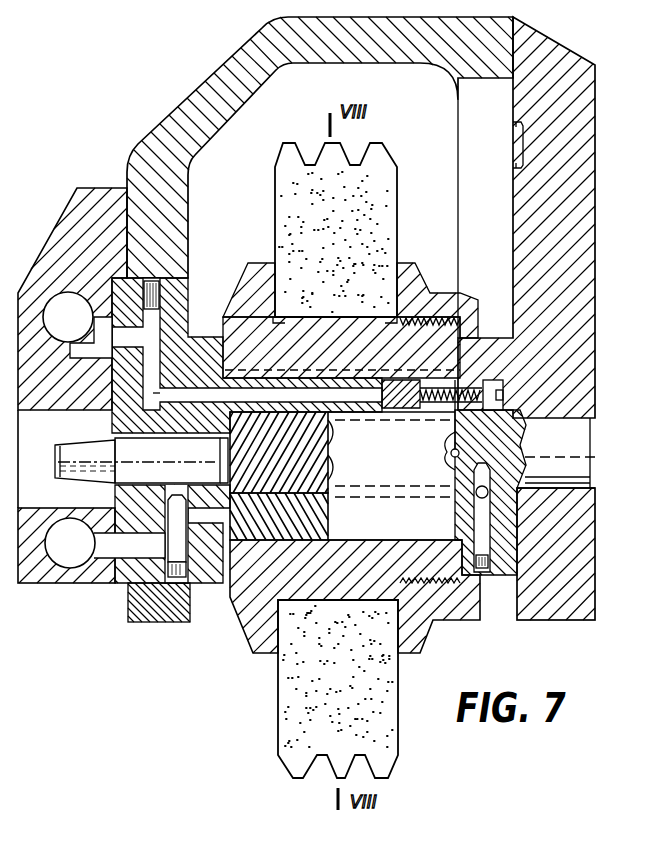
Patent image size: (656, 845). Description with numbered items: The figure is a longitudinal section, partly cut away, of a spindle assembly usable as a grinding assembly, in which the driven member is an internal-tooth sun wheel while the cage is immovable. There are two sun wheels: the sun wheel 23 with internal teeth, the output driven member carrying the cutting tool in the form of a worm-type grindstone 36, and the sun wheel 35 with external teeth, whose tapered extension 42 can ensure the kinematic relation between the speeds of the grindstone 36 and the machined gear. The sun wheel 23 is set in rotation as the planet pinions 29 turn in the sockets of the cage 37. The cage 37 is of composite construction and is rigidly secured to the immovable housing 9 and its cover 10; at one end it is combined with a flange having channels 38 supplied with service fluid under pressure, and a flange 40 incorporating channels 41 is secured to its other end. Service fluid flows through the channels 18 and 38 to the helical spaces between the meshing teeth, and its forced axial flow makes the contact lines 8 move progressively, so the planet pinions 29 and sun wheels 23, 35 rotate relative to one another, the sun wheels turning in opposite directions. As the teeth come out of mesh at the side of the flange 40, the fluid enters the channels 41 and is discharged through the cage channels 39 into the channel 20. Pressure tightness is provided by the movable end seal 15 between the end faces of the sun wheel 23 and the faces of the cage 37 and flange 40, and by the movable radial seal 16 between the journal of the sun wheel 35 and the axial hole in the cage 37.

The contact lines 8 is at (325, 477).
The housing 9 is at (143, 150).
The cover 10 is at (595, 240).
The movable end seal 15 is at (215, 365).
The movable radial seal 16 is at (160, 492).
The channel 18 is at (91, 517).
The channel 20 is at (62, 303).
The sun wheel 23 is at (258, 637).
The planet pinions 29 is at (320, 520).
The sun wheel 35 is at (305, 437).
The worm-type grindstone 36 is at (285, 690).
The cage 37 is at (209, 580).
The channels 38 is at (140, 545).
The channels 39 is at (110, 417).
The flange 40 is at (583, 432).
The channels 41 is at (472, 495).
The tapered extension 42 is at (80, 460).